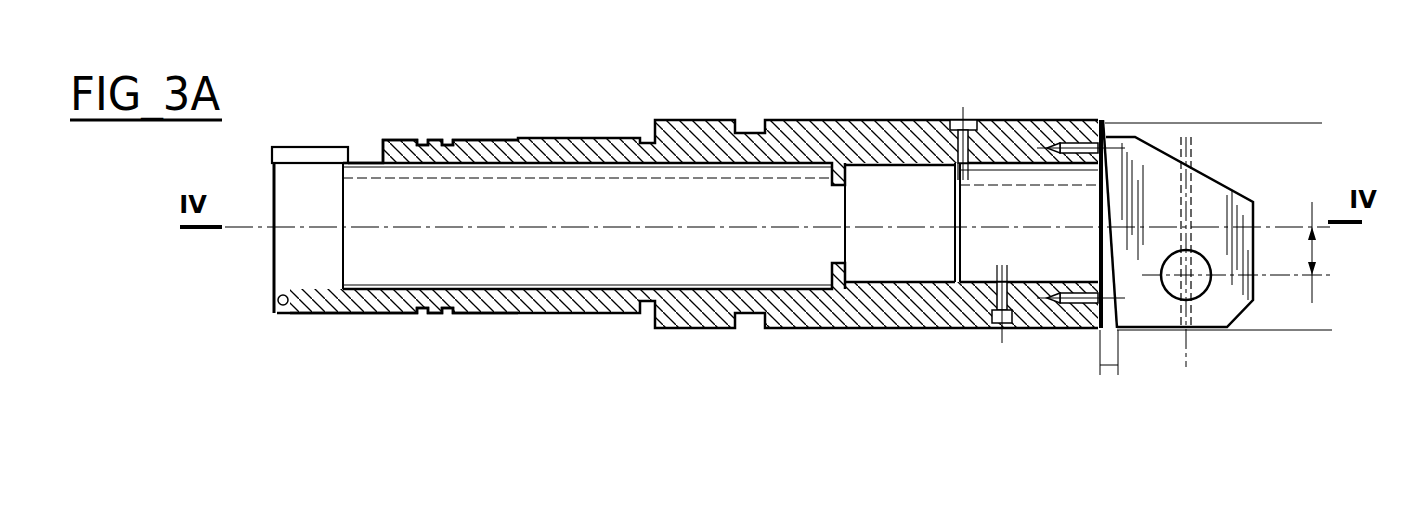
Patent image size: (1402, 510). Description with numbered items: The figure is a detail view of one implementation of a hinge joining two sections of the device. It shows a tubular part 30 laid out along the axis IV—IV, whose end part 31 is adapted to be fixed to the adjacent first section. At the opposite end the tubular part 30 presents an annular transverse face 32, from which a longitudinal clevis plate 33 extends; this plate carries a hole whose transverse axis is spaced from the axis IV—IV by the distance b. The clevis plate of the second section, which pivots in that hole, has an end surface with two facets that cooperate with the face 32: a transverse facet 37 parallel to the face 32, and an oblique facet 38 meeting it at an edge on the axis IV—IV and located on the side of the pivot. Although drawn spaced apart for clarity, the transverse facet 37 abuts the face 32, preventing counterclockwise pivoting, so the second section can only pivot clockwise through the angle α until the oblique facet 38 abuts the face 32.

The tubular part 30 is at (893, 122).
The end part 31 is at (400, 148).
The annular transverse face 32 is at (1106, 126).
The clevis plate 33 is at (1223, 197).
The transverse facet 37 is at (1107, 188).
The oblique facet 38 is at (1104, 302).